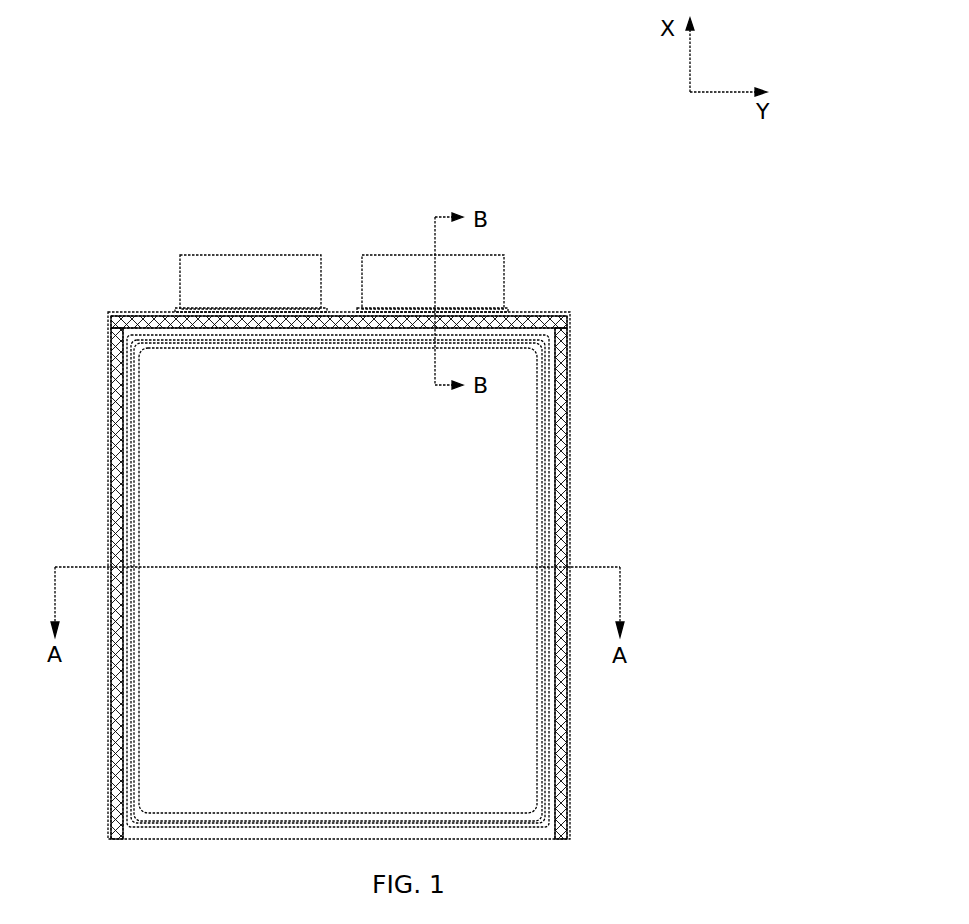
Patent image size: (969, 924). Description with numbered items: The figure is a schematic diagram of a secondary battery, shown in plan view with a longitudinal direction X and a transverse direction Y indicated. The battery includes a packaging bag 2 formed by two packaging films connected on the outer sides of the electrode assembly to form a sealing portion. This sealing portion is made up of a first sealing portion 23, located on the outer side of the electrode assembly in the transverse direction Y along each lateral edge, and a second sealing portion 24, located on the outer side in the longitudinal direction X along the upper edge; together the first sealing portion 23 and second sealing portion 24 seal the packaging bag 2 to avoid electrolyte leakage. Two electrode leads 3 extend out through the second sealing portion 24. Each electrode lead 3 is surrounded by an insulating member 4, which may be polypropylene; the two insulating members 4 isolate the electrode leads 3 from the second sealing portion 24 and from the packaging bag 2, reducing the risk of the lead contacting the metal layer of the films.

The packaging bag 2 is at (676, 544).
The electrode lead 3 is at (255, 267).
The insulating member 4 is at (193, 310).
The first sealing portion 23 is at (112, 462).
The second sealing portion 24 is at (537, 317).